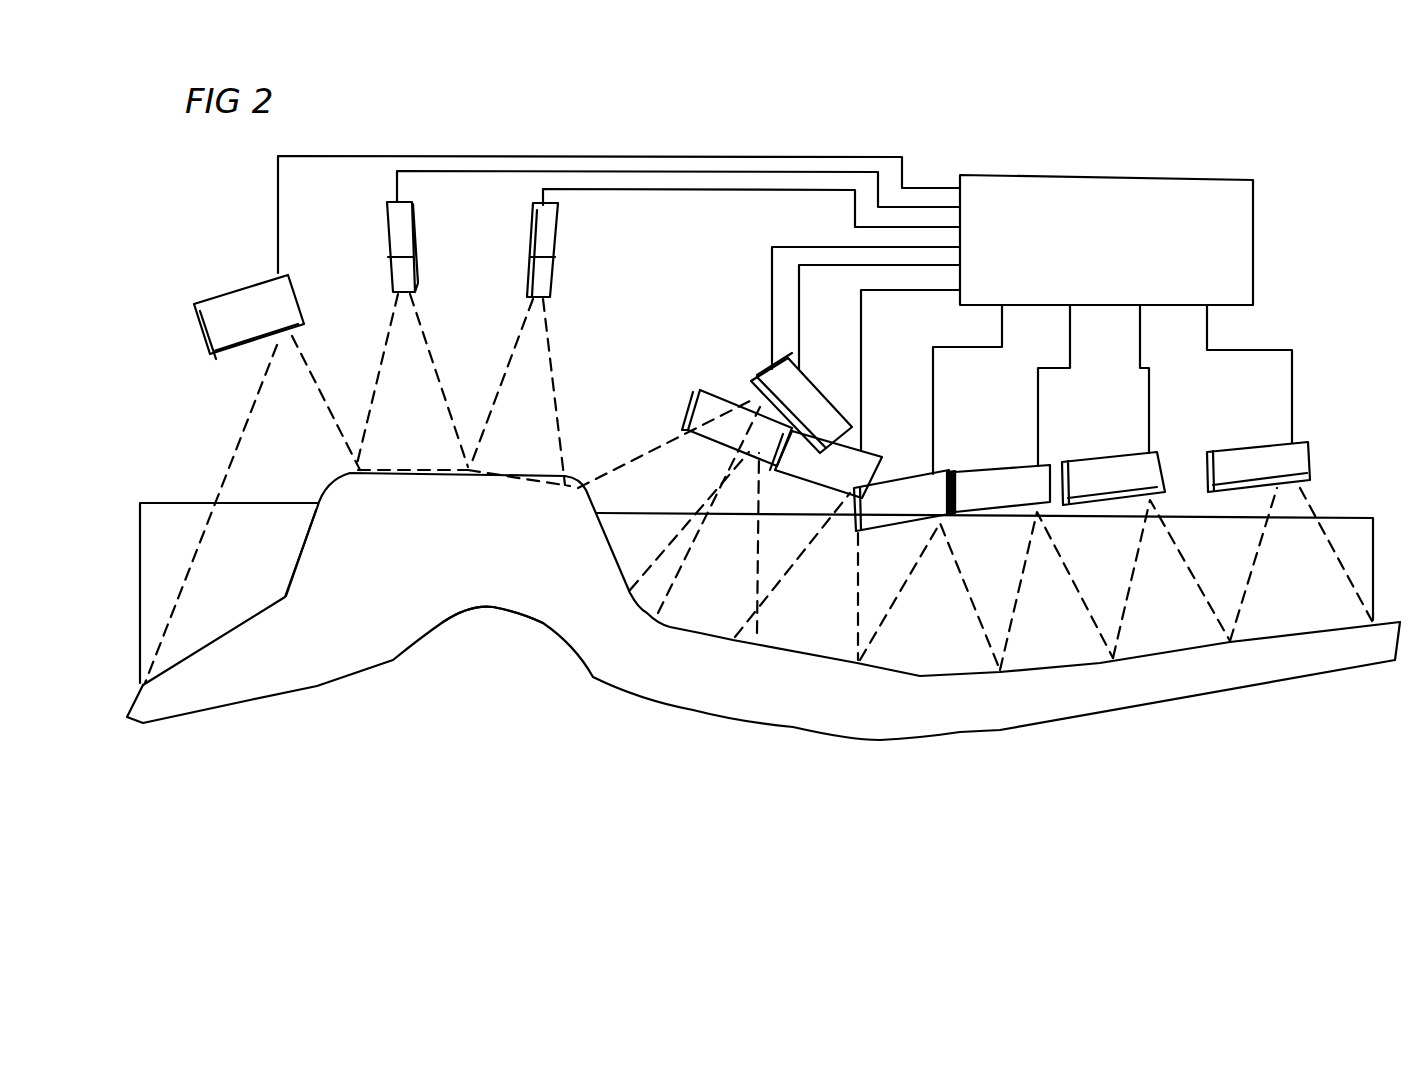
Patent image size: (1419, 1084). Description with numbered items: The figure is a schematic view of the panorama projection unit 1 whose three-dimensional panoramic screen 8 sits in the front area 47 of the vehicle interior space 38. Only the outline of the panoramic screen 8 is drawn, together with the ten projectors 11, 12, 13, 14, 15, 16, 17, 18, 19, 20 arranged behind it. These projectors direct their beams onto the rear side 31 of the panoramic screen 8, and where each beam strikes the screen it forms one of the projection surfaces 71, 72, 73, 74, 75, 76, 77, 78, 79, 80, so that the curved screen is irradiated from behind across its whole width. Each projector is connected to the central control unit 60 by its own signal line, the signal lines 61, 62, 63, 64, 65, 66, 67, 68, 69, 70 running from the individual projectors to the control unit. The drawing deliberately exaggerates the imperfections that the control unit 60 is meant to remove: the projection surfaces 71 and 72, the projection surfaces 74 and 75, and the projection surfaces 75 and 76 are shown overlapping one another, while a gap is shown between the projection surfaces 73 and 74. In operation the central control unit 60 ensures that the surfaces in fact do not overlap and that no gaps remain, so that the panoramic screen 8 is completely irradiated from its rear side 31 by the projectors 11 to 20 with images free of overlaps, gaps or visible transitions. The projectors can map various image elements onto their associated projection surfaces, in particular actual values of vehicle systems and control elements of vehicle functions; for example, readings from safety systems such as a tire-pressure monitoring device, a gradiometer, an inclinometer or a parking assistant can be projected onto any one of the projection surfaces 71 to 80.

The panorama projection unit 1 is at (1279, 219).
The panoramic screen 8 is at (826, 737).
The projector 11 is at (236, 330).
The projector 12 is at (387, 247).
The projector 13 is at (537, 240).
The projector 14 is at (774, 372).
The projector 15 is at (700, 408).
The projector 16 is at (863, 474).
The projector 17 is at (953, 472).
The projector 18 is at (1037, 468).
The projector 19 is at (1143, 463).
The projector 20 is at (1284, 453).
The rear side 31 is at (298, 563).
The vehicle interior space 38 is at (676, 852).
The front area 47 is at (512, 636).
The central control unit 60 is at (1082, 256).
The signal line 61 is at (356, 160).
The signal line 62 is at (518, 177).
The signal line 63 is at (660, 193).
The signal line 64 is at (801, 273).
The signal line 65 is at (770, 262).
The signal line 66 is at (866, 316).
The signal line 67 is at (935, 350).
The signal line 68 is at (1073, 338).
The signal line 69 is at (1143, 340).
The signal line 70 is at (1283, 334).
The projection surface 71 is at (212, 640).
The projection surface 72 is at (425, 471).
The projection surface 73 is at (531, 473).
The projection surface 74 is at (619, 566).
The projection surface 75 is at (721, 631).
The projection surface 76 is at (836, 656).
The projection surface 77 is at (966, 678).
The projection surface 78 is at (1087, 667).
The projection surface 79 is at (1208, 655).
The projection surface 80 is at (1338, 633).